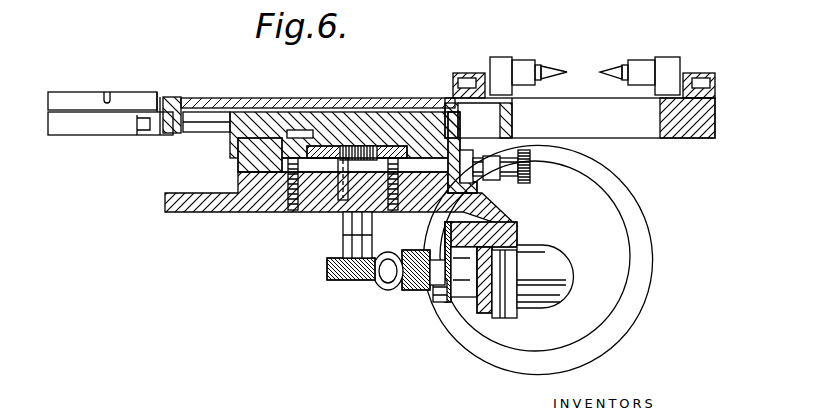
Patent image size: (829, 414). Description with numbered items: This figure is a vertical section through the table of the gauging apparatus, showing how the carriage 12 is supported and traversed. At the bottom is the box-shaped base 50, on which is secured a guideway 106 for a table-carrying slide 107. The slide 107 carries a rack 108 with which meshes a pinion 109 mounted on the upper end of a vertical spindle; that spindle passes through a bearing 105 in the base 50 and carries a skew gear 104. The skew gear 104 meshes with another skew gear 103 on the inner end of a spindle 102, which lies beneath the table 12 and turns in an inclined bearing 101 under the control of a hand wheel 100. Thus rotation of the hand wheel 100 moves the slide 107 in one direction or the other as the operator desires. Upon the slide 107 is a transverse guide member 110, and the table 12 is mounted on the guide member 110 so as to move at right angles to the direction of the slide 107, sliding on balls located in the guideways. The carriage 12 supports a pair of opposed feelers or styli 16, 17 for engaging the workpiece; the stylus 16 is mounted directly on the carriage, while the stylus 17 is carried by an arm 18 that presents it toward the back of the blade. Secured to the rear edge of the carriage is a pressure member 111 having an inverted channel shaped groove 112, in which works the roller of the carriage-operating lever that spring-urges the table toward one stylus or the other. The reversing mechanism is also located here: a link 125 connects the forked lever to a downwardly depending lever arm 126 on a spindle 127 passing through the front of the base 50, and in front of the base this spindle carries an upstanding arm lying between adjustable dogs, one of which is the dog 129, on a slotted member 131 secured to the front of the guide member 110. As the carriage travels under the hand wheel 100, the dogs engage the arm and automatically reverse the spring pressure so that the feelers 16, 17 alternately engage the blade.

The carriage 12 is at (355, 100).
The stylus 16 is at (537, 66).
The stylus 17 is at (628, 63).
The arm 18 is at (635, 129).
The base 50 is at (228, 211).
The hand wheel 100 is at (627, 311).
The inclined bearing 101 is at (541, 307).
The spindle 102 is at (385, 277).
The skew gear 103 is at (410, 290).
The skew gear 104 is at (347, 273).
The bearing 105 is at (352, 230).
The guideway 106 is at (243, 158).
The table-carrying slide 107 is at (273, 140).
The rack 108 is at (325, 146).
The pinion 109 is at (358, 145).
The transverse guide member 110 is at (248, 120).
The pressure member 111 is at (173, 98).
The inverted channel shaped groove 112 is at (148, 130).
The link 125 is at (442, 302).
The lever arm 126 is at (443, 257).
The spindle 127 is at (518, 230).
The adjustable dog 129 is at (545, 160).
The slotted member 131 is at (505, 193).